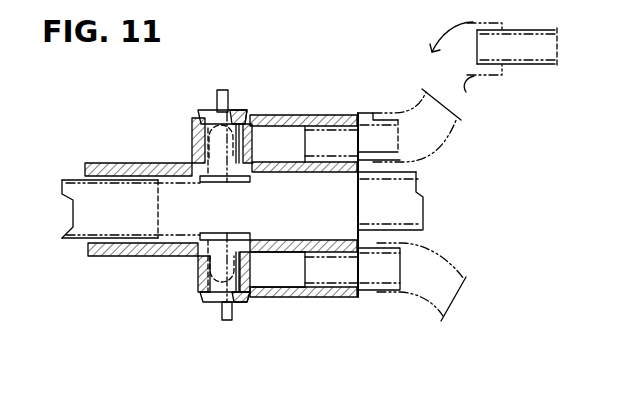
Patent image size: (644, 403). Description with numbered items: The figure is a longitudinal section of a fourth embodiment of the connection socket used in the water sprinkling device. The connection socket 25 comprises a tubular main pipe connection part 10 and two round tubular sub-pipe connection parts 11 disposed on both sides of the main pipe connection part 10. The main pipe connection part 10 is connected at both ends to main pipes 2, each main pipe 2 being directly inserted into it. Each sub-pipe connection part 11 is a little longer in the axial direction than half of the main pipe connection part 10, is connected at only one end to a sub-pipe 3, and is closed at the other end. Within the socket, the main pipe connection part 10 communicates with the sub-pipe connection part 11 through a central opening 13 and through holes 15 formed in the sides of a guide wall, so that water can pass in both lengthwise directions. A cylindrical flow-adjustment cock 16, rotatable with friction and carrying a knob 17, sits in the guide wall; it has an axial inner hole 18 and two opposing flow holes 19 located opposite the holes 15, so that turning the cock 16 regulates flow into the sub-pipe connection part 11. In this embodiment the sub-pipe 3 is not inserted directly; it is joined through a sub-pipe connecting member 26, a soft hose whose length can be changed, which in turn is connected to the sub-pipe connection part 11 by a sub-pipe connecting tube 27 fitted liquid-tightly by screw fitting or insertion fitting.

The main pipe 2 is at (73, 240).
The sub-pipe 3 is at (518, 47).
The main pipe connection part 10 is at (180, 208).
The sub-pipe connection part 11 is at (292, 137).
The opening 13 is at (205, 146).
The hole 15 is at (253, 270).
The flow-adjustment cock 16 is at (232, 113).
The knob 17 is at (218, 102).
The hole 18 is at (229, 176).
The flow hole 19 is at (250, 117).
The connection socket 25 is at (221, 203).
The sub-pipe connecting member 26 is at (423, 110).
The sub-pipe connecting tube 27 is at (368, 137).